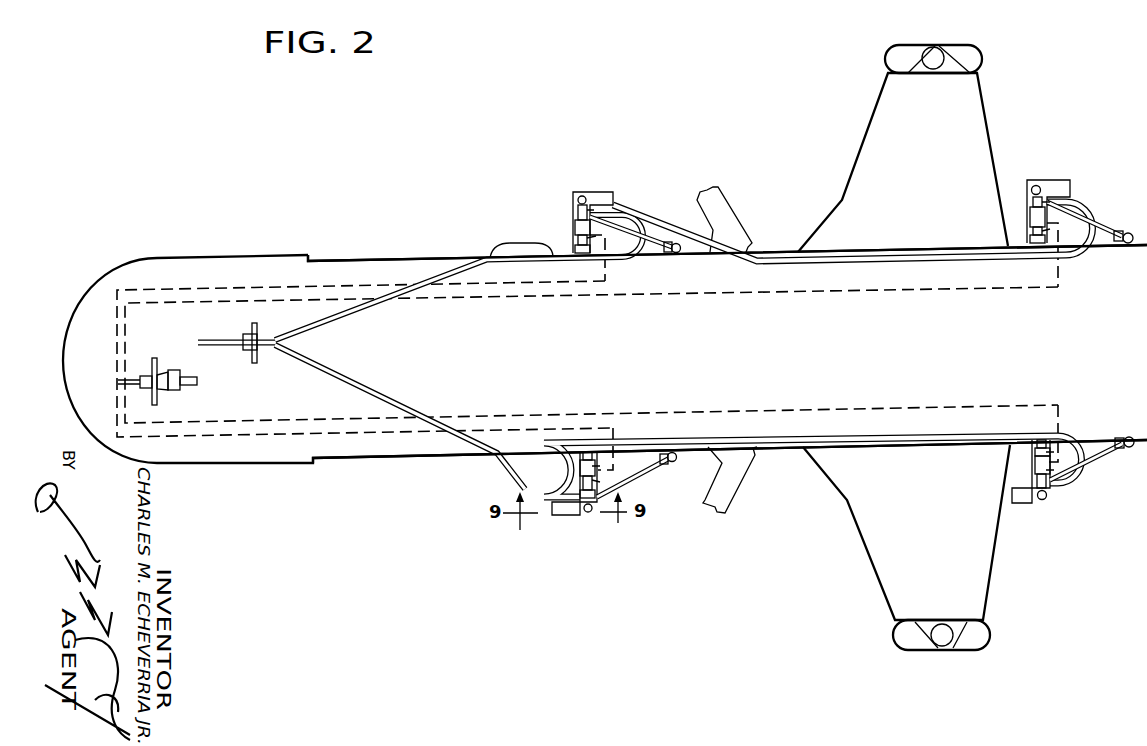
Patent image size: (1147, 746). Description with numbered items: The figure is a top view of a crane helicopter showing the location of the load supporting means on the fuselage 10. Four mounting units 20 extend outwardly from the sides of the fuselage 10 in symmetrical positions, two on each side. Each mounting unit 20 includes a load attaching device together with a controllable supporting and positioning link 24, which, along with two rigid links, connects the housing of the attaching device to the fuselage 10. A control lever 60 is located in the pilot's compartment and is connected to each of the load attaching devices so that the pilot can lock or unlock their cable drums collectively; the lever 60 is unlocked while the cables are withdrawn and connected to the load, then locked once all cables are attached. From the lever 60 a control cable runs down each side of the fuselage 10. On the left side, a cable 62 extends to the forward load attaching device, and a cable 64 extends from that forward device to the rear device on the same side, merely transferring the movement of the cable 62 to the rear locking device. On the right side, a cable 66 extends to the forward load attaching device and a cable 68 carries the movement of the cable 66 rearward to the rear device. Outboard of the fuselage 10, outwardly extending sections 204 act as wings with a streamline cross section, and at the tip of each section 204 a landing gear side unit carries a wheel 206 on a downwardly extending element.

The fuselage 10 is at (716, 358).
The mounting unit 20 is at (613, 189).
The controllable supporting and positioning link 24 is at (569, 224).
The control lever 60 is at (214, 338).
The cable 62 is at (392, 396).
The cable 64 is at (826, 435).
The cable 66 is at (352, 313).
The cable 68 is at (805, 259).
The outwardly extending section 204 is at (985, 116).
The wheel 206 is at (987, 45).